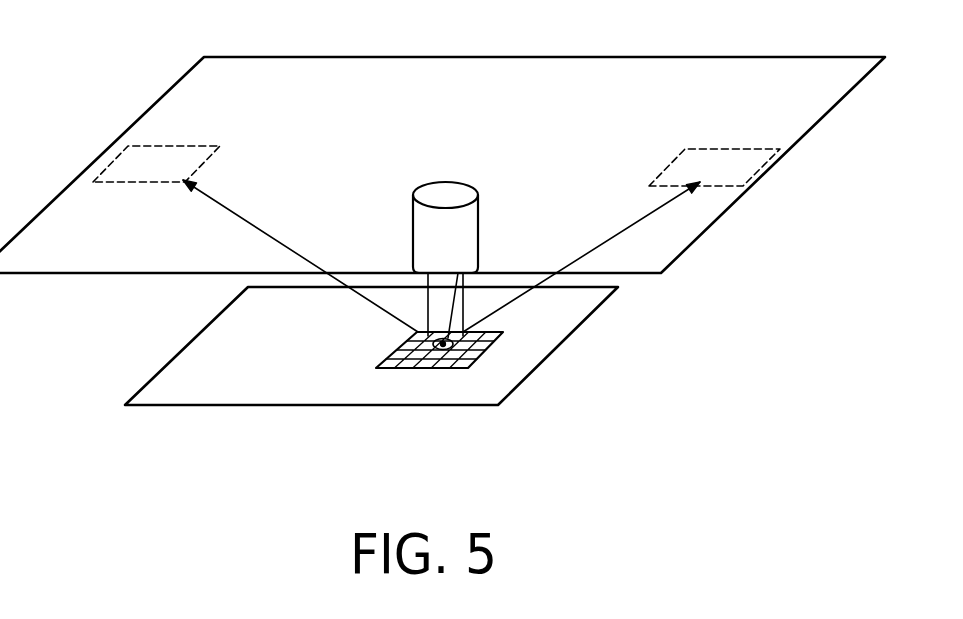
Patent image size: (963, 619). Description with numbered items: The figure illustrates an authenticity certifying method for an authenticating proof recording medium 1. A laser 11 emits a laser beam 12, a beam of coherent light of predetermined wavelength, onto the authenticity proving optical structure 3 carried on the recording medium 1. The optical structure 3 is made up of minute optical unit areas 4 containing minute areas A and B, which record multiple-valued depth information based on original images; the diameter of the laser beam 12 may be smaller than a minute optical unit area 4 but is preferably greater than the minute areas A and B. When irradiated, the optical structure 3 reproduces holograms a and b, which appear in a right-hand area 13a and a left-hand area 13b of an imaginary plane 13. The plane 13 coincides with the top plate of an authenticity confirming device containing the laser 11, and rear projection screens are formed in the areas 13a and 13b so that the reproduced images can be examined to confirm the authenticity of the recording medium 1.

The authenticating proof recording medium 1 is at (607, 342).
The authenticity proving optical structure 3 is at (482, 355).
The minute optical unit areas 4 is at (450, 369).
The laser 11 is at (440, 190).
The laser beam 12 is at (466, 300).
The imaginary plane 13 is at (472, 85).
The right-hand area 13a is at (758, 156).
The left-hand area 13b is at (118, 167).